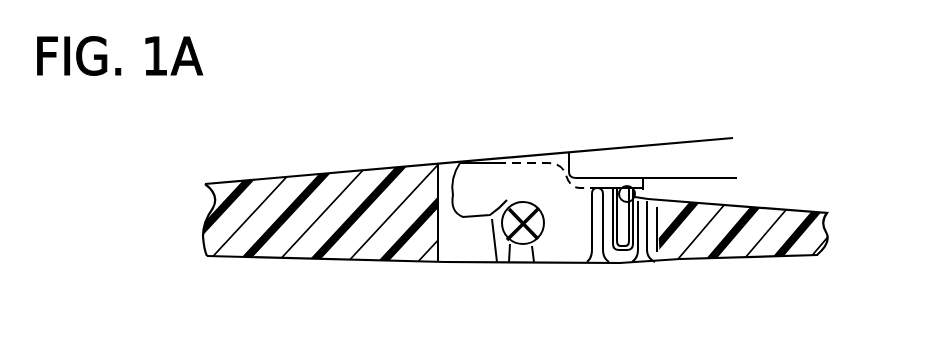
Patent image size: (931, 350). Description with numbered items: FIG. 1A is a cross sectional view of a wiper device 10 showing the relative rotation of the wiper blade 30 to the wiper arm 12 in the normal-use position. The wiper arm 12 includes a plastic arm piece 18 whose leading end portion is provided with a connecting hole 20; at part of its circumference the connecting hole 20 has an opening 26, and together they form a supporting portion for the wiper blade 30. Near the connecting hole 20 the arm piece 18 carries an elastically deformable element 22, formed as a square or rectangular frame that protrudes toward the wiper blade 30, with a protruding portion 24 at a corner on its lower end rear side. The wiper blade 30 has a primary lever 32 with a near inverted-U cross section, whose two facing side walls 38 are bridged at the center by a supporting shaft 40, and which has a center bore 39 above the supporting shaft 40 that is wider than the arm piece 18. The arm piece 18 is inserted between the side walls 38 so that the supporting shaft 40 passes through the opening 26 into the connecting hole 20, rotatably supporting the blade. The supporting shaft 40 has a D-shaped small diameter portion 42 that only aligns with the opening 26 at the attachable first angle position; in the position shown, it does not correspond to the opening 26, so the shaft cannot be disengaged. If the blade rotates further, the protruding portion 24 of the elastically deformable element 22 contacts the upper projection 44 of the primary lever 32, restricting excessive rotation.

The wiper device 10 is at (495, 84).
The wiper arm 12 is at (668, 150).
The arm piece 18 is at (653, 129).
The connecting hole 20 is at (523, 200).
The elastically deformable element 22 is at (617, 256).
The protruding portion 24 is at (673, 255).
The opening 26 is at (471, 258).
The wiper blade 30 is at (333, 188).
The primary lever 32 is at (361, 181).
The side walls 38 is at (455, 242).
The center bore 39 is at (460, 162).
The supporting shaft 40 is at (532, 255).
The small diameter portion 42 is at (494, 252).
The upper projection 44 is at (620, 186).